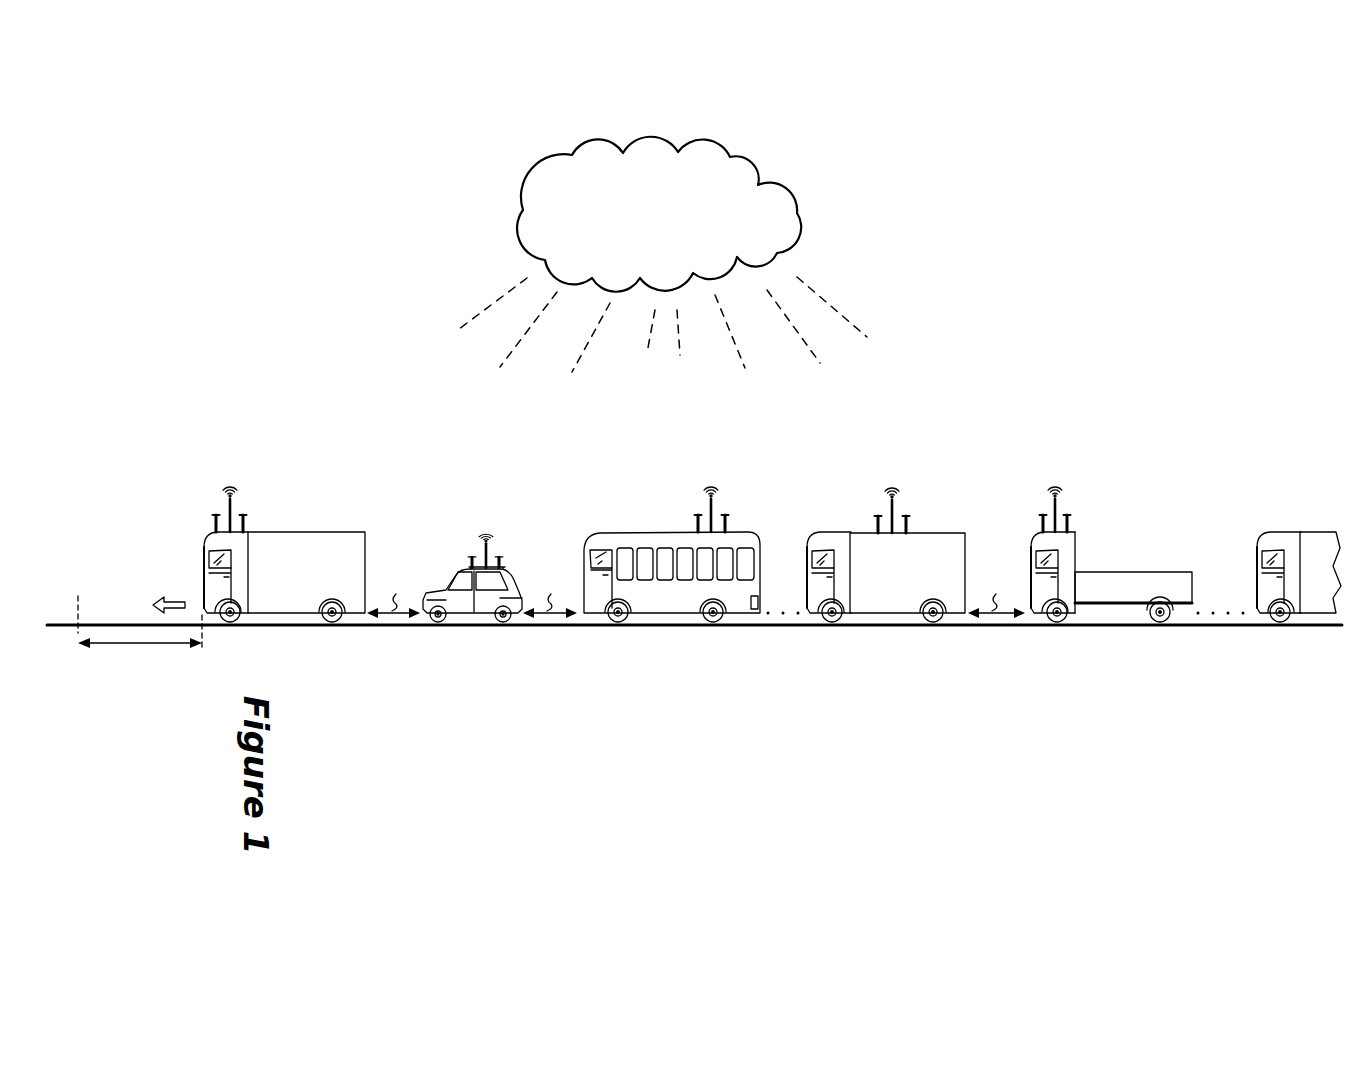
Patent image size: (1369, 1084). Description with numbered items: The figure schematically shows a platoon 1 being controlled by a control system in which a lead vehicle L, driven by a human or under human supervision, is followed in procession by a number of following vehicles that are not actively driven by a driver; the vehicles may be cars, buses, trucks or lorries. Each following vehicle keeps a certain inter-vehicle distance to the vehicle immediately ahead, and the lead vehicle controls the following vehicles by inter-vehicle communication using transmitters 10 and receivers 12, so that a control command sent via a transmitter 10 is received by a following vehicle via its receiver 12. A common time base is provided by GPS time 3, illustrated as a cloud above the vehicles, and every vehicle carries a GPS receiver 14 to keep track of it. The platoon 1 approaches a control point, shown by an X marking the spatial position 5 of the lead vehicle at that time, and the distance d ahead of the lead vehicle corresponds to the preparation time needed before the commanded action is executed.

The platoon 1 is at (217, 382).
The GPS time 3 is at (826, 159).
The spatial position 5 is at (97, 565).
The transmitter 10 is at (233, 486).
The receiver 12 is at (246, 515).
The GPS receiver 14 is at (213, 522).